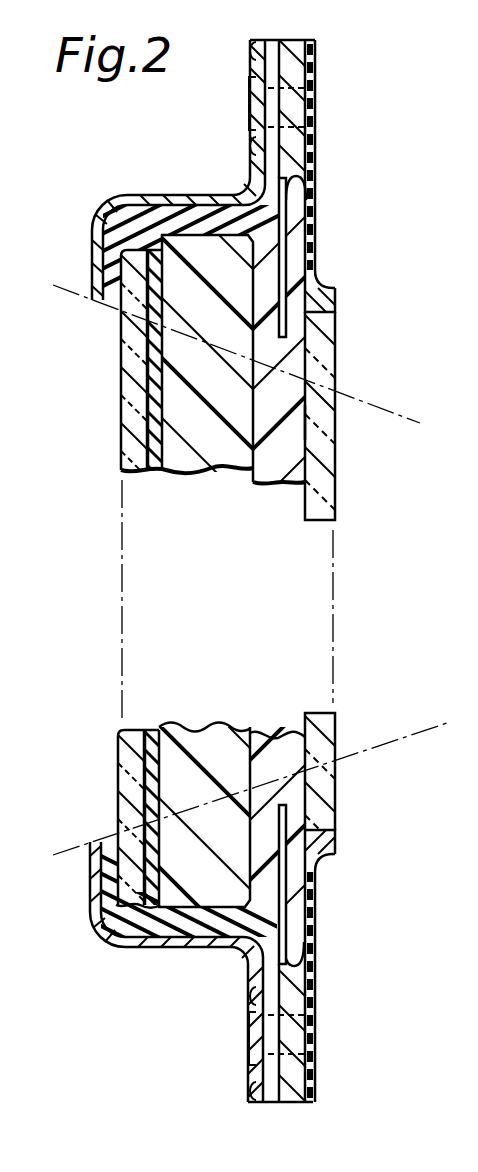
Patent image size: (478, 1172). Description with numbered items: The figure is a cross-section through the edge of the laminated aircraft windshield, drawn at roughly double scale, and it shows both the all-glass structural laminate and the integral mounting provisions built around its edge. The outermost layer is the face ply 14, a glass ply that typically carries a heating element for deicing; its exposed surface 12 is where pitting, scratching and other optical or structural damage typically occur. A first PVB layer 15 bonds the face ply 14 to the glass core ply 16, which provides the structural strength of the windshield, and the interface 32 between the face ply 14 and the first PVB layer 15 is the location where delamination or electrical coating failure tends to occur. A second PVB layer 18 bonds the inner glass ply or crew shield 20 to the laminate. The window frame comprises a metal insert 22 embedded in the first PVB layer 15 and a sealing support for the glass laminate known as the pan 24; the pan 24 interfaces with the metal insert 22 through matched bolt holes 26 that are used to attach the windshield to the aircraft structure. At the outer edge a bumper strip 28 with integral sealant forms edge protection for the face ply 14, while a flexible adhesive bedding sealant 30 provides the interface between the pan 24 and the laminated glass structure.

The surface 12 is at (336, 348).
The hub 14 is at (305, 96).
The first PVB layer 15 is at (287, 478).
The glass core ply 16 is at (173, 417).
The second PVB layer 18 is at (155, 387).
The crew shield 20 is at (123, 453).
The metal insert 22 is at (292, 40).
The pan 24 is at (100, 222).
The matched bolt holes 26 is at (293, 113).
The bumper strip 28 is at (331, 286).
The flexible adhesive bedding sealant 30 is at (100, 248).
The interface 32 is at (318, 417).